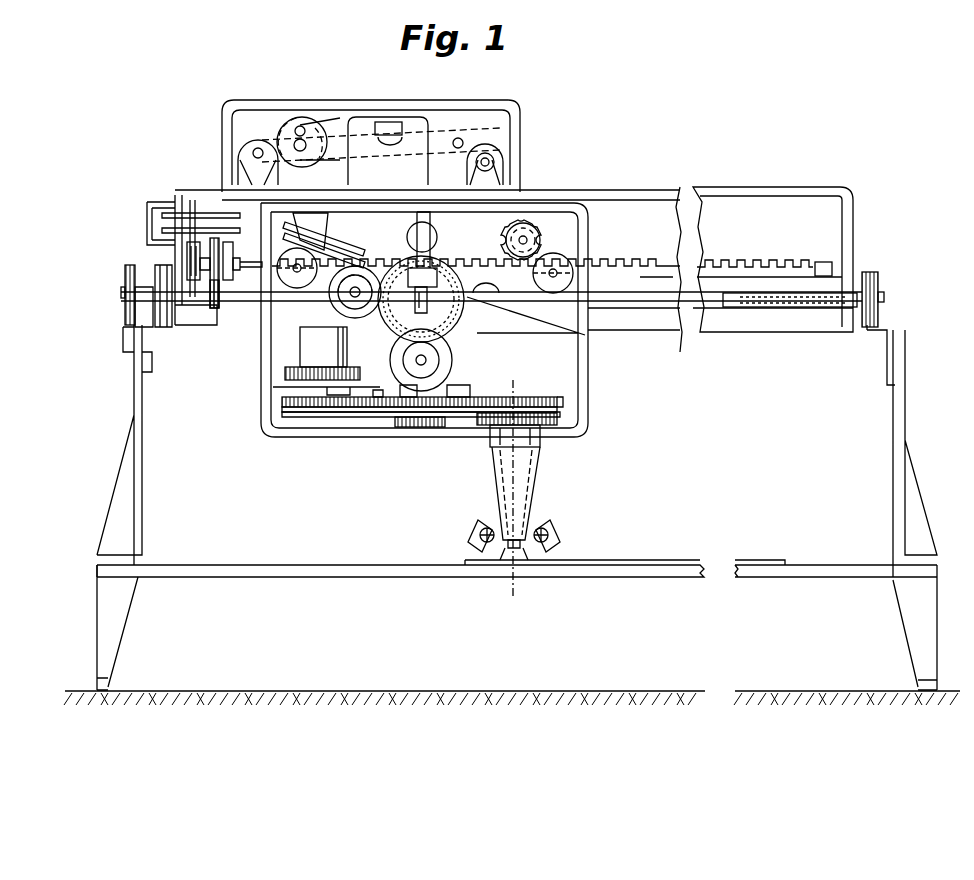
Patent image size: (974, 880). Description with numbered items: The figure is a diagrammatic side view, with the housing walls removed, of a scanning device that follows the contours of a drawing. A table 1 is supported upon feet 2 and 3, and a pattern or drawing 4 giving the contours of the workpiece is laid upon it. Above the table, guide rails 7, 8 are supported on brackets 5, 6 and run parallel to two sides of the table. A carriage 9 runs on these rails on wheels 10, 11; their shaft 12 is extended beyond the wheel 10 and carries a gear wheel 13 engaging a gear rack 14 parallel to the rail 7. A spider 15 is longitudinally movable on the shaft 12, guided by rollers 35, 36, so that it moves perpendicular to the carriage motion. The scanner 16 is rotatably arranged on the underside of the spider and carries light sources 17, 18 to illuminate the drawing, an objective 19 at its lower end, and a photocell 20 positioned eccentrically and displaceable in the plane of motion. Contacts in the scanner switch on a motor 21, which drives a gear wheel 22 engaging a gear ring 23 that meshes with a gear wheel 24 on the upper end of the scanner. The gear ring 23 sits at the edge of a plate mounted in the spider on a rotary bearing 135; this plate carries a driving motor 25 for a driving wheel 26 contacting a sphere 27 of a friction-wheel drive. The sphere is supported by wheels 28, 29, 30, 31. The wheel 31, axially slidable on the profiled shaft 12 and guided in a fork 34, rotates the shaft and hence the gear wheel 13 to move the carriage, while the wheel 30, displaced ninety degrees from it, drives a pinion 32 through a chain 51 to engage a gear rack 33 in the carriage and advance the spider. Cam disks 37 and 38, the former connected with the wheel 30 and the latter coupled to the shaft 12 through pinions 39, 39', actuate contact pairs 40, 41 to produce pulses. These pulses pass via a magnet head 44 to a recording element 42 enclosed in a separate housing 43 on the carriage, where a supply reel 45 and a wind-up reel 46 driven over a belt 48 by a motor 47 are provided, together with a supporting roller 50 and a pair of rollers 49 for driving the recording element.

The table 1 is at (334, 573).
The foot 2 is at (115, 633).
The foot 3 is at (912, 633).
The drawing 4 is at (648, 538).
The bracket 5 is at (111, 492).
The bracket 6 is at (912, 478).
The guide rail 7 is at (142, 358).
The guide rail 8 is at (888, 337).
The carriage 9 is at (780, 193).
The wheel 10 is at (157, 273).
The wheel 11 is at (870, 273).
The shaft 12 is at (797, 307).
The gear wheel 13 is at (126, 277).
The gear rack 14 is at (127, 338).
The spider 15 is at (459, 432).
The scanner 16 is at (520, 497).
The light source 17 is at (482, 533).
The light source 18 is at (545, 533).
The objective 19 is at (505, 548).
The photocell 20 is at (537, 443).
The motor 21 is at (303, 350).
The gear wheel 22 is at (337, 405).
The gear ring 23 is at (390, 409).
The gear wheel 24 is at (557, 408).
The driving motor 25 is at (345, 420).
The driving wheel 26 is at (437, 365).
The sphere 27 is at (450, 320).
The wheel 28 is at (435, 230).
The wheel 29 is at (480, 263).
The wheel 30 is at (347, 312).
The wheel 31 is at (413, 310).
The pinion 32 is at (545, 235).
The gear rack 33 is at (790, 265).
The fork 34 is at (425, 262).
The roller 35 is at (297, 283).
The roller 36 is at (568, 262).
The cam disk 37 is at (365, 268).
The cam disk 38 is at (172, 203).
The pinion 39 is at (177, 259).
The pinion 39' is at (199, 318).
The pair of contacts 40 is at (347, 243).
The pair of contacts 41 is at (233, 223).
The recording element 42 is at (362, 126).
The housing 43 is at (255, 95).
The magnet head 44 is at (403, 127).
The supply reel 45 is at (243, 152).
The wind-up reel 46 is at (490, 153).
The motor 47 is at (313, 137).
The belt 48 is at (340, 125).
The pair of rollers 49 is at (298, 131).
The supporting roller 50 is at (459, 138).
The chain 51 is at (421, 278).
The rotary bearing 135 is at (418, 425).